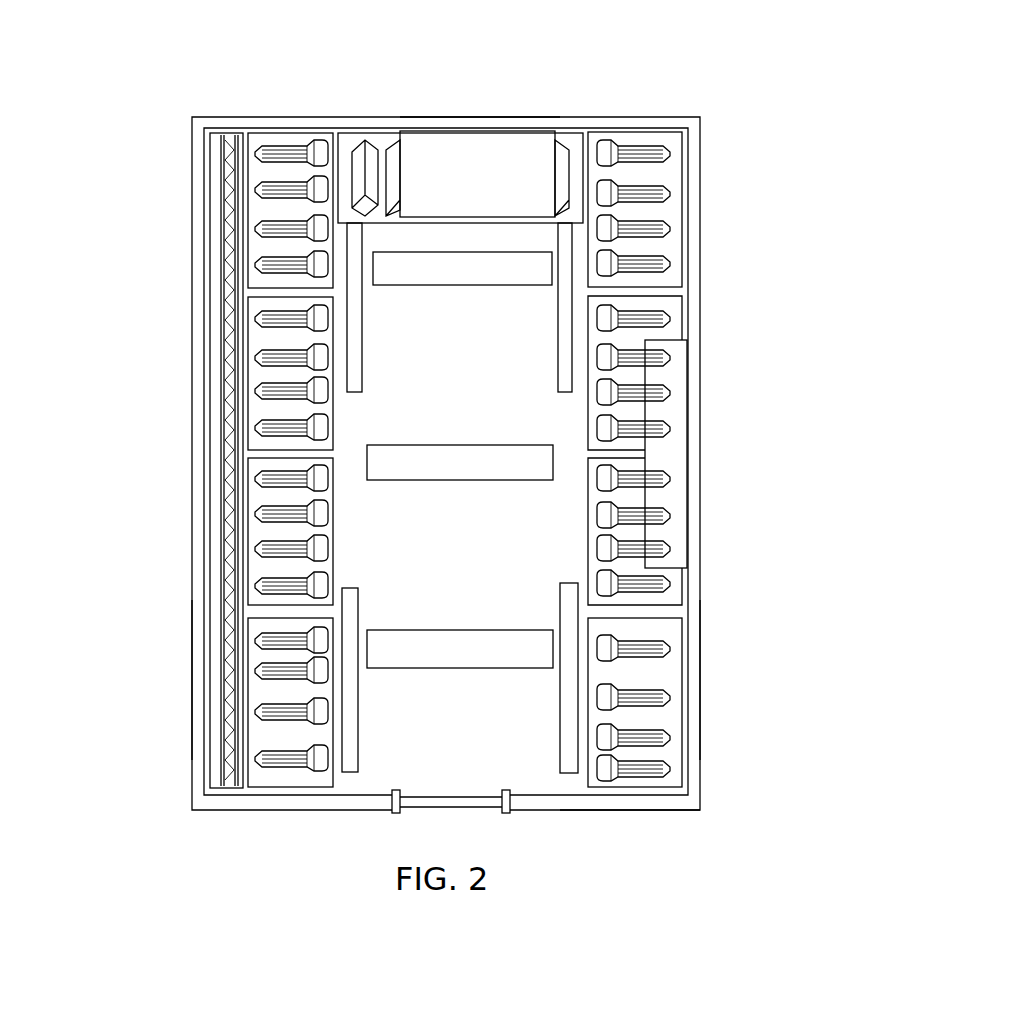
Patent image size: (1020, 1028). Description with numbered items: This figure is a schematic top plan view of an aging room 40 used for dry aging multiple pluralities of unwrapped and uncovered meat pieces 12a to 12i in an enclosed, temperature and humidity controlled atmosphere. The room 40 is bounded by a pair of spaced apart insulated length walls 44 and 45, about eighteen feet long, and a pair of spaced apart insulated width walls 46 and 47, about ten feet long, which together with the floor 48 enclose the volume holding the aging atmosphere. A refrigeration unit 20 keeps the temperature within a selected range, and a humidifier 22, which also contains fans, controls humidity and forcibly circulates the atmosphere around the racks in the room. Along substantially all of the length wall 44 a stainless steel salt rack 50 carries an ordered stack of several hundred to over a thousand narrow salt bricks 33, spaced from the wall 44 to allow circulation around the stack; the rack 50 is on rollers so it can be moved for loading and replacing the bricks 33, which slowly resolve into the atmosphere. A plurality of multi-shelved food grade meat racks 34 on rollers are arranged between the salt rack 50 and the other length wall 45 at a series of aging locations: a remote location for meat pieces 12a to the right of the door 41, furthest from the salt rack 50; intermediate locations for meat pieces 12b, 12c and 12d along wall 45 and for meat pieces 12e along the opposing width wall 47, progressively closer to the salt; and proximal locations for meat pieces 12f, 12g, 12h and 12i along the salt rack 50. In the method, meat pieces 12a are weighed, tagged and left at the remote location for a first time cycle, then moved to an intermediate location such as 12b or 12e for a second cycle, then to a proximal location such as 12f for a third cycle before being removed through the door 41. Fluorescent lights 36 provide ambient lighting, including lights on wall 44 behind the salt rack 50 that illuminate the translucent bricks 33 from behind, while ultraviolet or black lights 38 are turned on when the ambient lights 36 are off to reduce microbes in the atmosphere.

The meat pieces 12a is at (670, 775).
The meat pieces 12b is at (655, 548).
The meat pieces 12c is at (660, 358).
The meat pieces 12d is at (670, 187).
The meat pieces 12e is at (565, 135).
The meat pieces 12f is at (258, 140).
The meat pieces 12g is at (245, 373).
The meat pieces 12h is at (250, 540).
The meat pieces 12i is at (245, 658).
The refrigeration unit 20 is at (665, 460).
The humidifier 22 is at (445, 135).
The salt bricks 33 is at (228, 215).
The meat racks 34 is at (378, 130).
The fluorescent lights 36 is at (415, 635).
The ultraviolet or black lights 38 is at (555, 318).
The aging room 40 is at (272, 832).
The door 41 is at (485, 805).
The length wall 44 is at (200, 722).
The length wall 45 is at (700, 690).
The width wall 46 is at (638, 802).
The width wall 47 is at (480, 124).
The floor 48 is at (465, 734).
The salt rack 50 is at (213, 268).